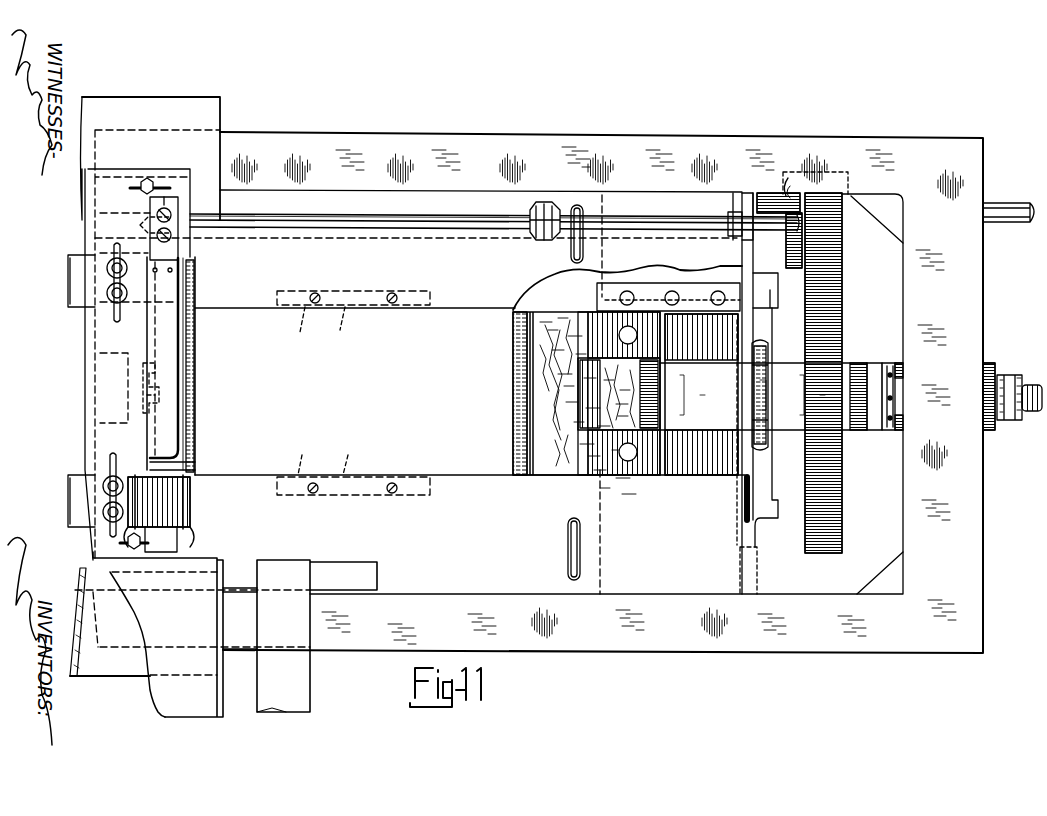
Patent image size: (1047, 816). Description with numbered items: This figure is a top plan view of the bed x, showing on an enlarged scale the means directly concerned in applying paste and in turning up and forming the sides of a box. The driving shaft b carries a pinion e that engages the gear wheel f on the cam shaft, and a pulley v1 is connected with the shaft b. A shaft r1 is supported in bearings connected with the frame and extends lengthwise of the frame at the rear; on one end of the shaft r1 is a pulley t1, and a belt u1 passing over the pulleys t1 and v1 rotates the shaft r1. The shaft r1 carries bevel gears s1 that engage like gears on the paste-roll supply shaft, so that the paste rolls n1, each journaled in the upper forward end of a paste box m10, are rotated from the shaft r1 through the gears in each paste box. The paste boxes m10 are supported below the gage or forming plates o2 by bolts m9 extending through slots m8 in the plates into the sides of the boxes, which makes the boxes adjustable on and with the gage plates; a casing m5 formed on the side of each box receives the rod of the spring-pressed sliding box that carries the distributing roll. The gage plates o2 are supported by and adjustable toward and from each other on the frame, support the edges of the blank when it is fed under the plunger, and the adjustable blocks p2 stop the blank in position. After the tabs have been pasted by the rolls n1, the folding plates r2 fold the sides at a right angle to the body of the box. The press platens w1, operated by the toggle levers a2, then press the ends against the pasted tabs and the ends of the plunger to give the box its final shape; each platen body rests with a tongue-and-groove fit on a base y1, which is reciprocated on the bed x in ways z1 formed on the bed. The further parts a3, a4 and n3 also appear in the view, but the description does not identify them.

The shaft r1 is at (410, 213).
The pulley v1 is at (800, 180).
The driving shaft b is at (1023, 223).
The pinion e is at (848, 236).
The paste boxes m10 is at (95, 268).
The bolts m9 is at (127, 272).
The casing m5 is at (121, 315).
The slots m8 is at (118, 458).
The adjustable blocks p2 is at (180, 240).
The paste roll n1 is at (195, 506).
The folding plates r2 is at (359, 392).
The bevel gears s1 is at (544, 238).
The pulley t1 is at (786, 234).
The belt u1 is at (794, 262).
The ways z1 is at (688, 306).
The gear wheel f is at (841, 336).
The pin a3 is at (301, 393).
The pin a4 is at (367, 393).
The slide plate n3 is at (198, 333).
The gage or forming plates o2 is at (105, 370).
The press platens w1 is at (518, 346).
The toggle levers a2 is at (851, 396).
The base y1 is at (722, 452).
The bed x is at (68, 567).